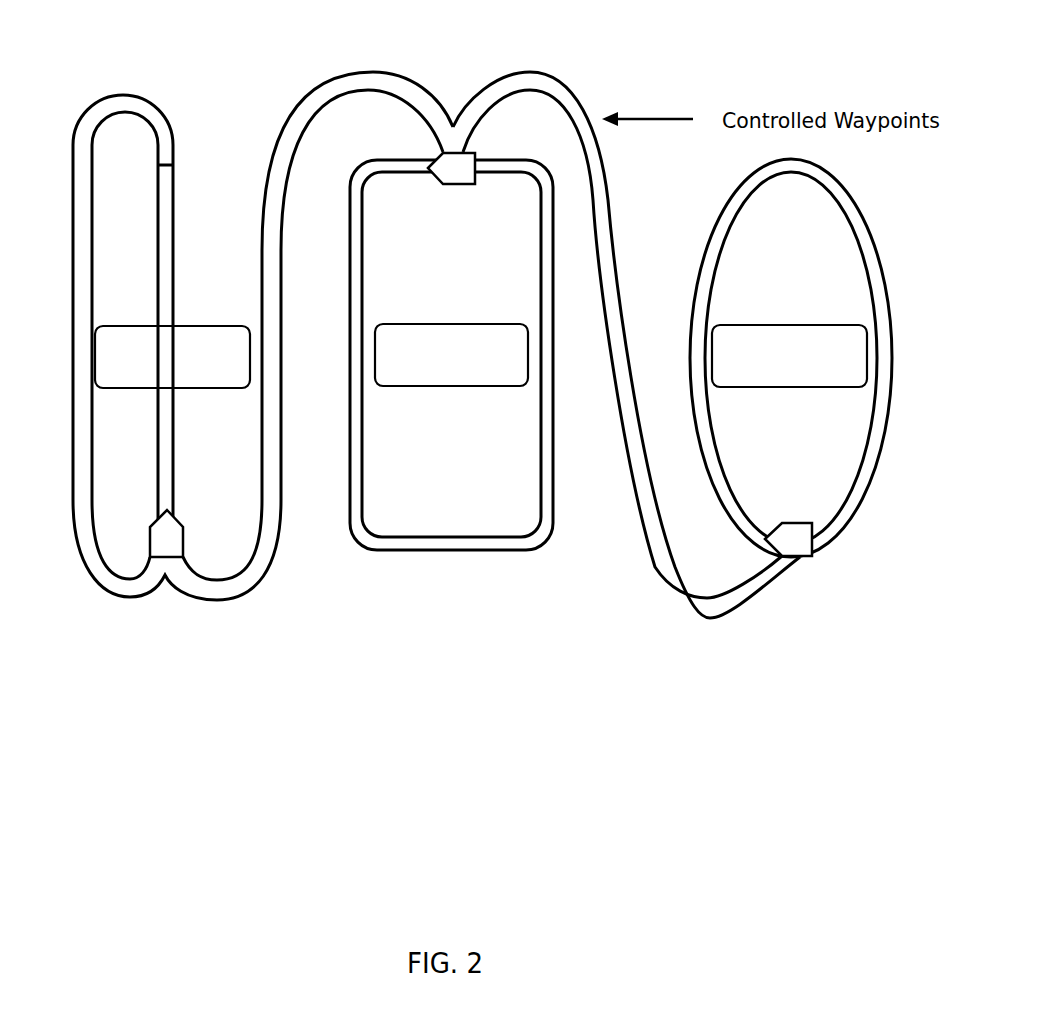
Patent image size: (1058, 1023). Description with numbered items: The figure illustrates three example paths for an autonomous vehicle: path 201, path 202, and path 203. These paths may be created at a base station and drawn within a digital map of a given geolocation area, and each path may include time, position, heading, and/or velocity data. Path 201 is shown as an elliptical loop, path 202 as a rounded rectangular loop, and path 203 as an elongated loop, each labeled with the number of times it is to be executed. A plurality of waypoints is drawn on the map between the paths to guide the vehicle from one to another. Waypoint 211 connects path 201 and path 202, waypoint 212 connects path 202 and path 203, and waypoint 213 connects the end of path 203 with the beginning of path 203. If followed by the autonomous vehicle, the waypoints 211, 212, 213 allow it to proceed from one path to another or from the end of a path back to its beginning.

The path 201 is at (870, 224).
The path 202 is at (533, 157).
The path 203 is at (174, 187).
The waypoint 211 is at (722, 605).
The waypoint 212 is at (368, 88).
The waypoint 213 is at (93, 563).